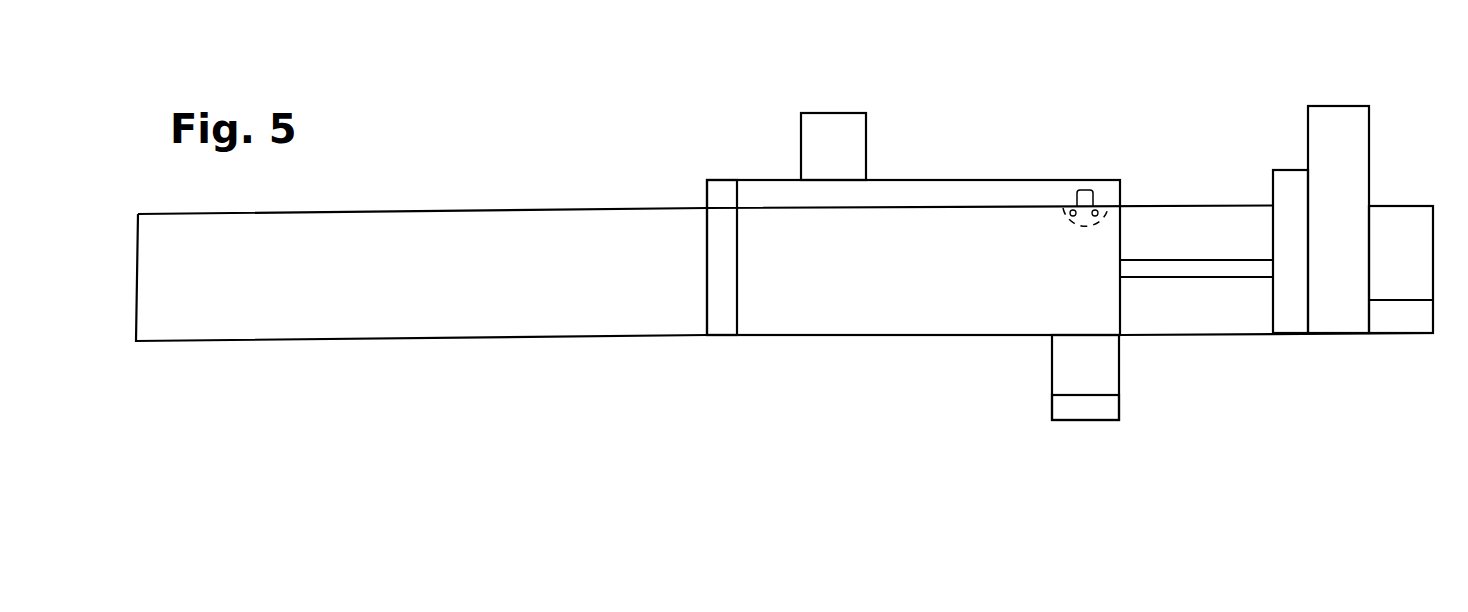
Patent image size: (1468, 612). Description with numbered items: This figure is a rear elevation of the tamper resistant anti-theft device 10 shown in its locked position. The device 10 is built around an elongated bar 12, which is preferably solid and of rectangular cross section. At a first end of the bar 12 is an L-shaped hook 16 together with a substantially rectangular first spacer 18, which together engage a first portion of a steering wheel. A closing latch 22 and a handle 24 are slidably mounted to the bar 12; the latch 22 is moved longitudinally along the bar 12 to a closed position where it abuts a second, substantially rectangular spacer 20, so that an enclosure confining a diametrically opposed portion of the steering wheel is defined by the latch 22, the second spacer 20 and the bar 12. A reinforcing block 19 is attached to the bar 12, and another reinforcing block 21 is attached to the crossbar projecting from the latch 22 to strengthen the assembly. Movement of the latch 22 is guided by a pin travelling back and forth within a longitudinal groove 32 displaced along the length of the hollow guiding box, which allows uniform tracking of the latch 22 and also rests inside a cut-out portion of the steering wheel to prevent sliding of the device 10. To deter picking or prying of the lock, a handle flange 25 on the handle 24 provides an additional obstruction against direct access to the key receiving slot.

The device 10 is at (796, 350).
The elongated bar 12 is at (453, 210).
The L-shaped hook 16 is at (1433, 210).
The first spacer 18 is at (1292, 317).
The reinforcing block 19 is at (1370, 135).
The second spacer 20 is at (727, 180).
The reinforcing block 21 is at (867, 145).
The closing latch 22 is at (965, 180).
The handle 24 is at (1122, 381).
The handle flange 25 is at (1050, 422).
The longitudinal groove 32 is at (1187, 267).